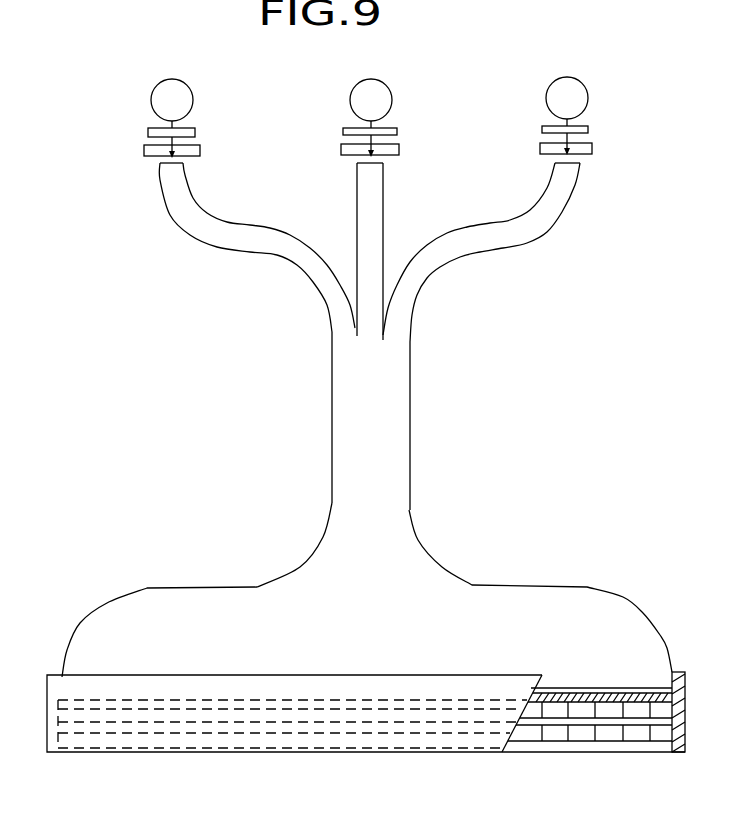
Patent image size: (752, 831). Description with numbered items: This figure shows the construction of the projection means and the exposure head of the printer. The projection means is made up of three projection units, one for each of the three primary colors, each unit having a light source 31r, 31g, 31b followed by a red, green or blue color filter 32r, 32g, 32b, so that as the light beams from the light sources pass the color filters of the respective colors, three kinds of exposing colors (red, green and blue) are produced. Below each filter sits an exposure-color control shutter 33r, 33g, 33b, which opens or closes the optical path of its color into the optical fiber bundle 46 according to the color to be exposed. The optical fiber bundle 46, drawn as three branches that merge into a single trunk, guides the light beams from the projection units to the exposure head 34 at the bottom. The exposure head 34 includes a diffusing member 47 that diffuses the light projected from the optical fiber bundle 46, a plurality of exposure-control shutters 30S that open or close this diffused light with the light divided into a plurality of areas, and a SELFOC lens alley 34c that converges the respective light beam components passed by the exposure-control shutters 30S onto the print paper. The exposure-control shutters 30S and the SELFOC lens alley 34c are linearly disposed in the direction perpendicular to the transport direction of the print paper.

The light source 31r is at (177, 80).
The red color filter 32r is at (195, 131).
The exposure-color control shutter 33r is at (201, 154).
The light source 31g is at (389, 88).
The green color filter 32g is at (397, 132).
The exposure-color control shutter 33g is at (341, 149).
The light source 31b is at (583, 88).
The blue color filter 32b is at (588, 128).
The exposure-color control shutter 33b is at (592, 150).
The optical fiber bundle 46 is at (585, 587).
The diffusing member 47 is at (585, 688).
The exposure-control shutters 30S is at (532, 713).
The SELFOC lens alley 34c is at (605, 738).
The exposure head 34 is at (688, 682).